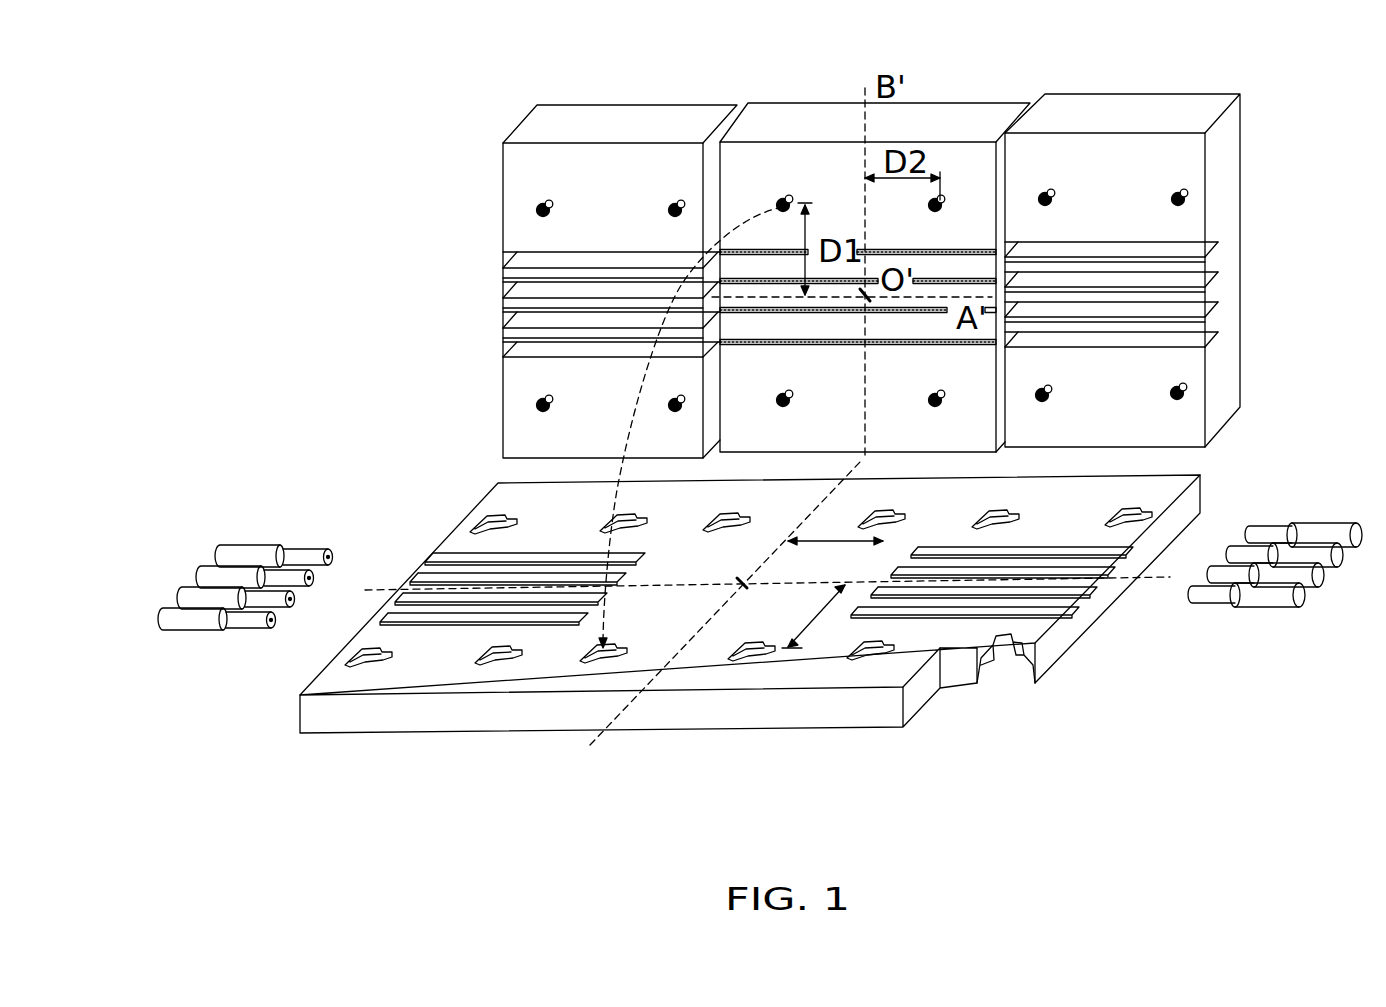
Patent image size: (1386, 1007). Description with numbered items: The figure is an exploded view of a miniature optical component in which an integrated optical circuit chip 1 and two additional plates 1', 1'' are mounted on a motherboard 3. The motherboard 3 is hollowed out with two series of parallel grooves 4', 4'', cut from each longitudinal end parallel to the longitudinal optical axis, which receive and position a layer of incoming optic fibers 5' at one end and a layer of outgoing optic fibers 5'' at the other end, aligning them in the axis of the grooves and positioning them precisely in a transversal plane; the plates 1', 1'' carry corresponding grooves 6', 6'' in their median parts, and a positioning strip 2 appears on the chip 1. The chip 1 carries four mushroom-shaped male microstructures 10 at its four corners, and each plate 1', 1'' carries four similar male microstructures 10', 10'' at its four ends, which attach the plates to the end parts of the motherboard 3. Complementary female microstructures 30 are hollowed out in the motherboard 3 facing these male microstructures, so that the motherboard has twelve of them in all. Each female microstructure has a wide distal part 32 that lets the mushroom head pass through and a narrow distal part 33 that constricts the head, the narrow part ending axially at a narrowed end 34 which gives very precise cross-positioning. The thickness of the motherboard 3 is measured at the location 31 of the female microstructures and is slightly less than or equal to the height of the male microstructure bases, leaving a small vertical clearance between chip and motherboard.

The integrated optical circuit chip 1 is at (875, 246).
The additional plate 1' is at (587, 250).
The additional plate 1'' is at (1173, 267).
The fiber positioning strip / groove 2 is at (988, 250).
The motherboard 3 is at (716, 668).
The parallel grooves 4' is at (499, 549).
The parallel grooves 4'' is at (1006, 640).
The incoming optic fibers 5' is at (262, 528).
The outgoing optic fibers 5'' is at (1275, 614).
The left plug grooves 6' is at (534, 303).
The right plug grooves 6'' is at (1177, 295).
The male microstructures 10 is at (816, 131).
The male microstructures 10' is at (460, 192).
The male microstructures 10'' is at (1267, 216).
The female microstructures 30 is at (590, 655).
The location of the female microstructures 31 is at (1007, 663).
The wide distal part 32 is at (355, 653).
The narrow distal part 33 is at (360, 655).
The narrowed end 34 is at (390, 657).